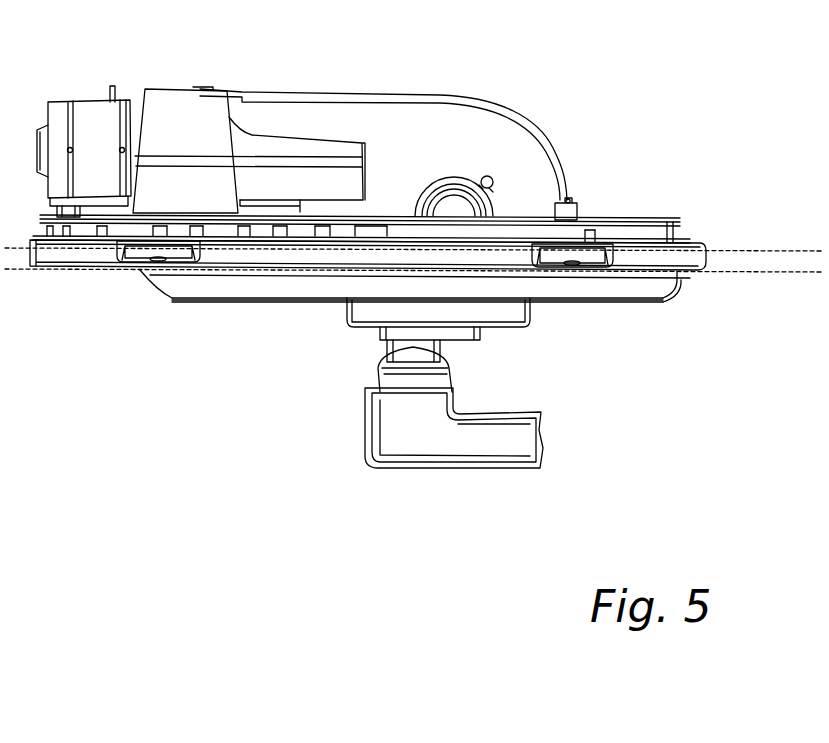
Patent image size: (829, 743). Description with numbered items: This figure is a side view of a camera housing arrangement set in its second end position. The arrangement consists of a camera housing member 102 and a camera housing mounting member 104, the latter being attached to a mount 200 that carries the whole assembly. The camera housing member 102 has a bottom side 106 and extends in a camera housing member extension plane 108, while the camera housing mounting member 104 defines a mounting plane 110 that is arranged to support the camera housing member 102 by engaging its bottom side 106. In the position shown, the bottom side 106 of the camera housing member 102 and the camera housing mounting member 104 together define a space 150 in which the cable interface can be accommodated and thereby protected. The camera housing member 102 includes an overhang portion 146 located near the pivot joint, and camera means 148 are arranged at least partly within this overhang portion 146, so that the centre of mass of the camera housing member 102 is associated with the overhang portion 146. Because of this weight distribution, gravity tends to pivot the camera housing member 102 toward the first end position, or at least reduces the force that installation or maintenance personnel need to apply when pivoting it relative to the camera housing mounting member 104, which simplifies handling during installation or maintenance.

The camera housing member 102 is at (637, 287).
The camera housing mounting member 104 is at (462, 330).
The bottom side 106 is at (62, 268).
The camera housing member extension plane 108 is at (758, 252).
The mounting plane 110 is at (758, 270).
The overhang portion 146 is at (185, 284).
The camera means 148 is at (212, 132).
The space 150 is at (365, 285).
The mount 200 is at (487, 452).